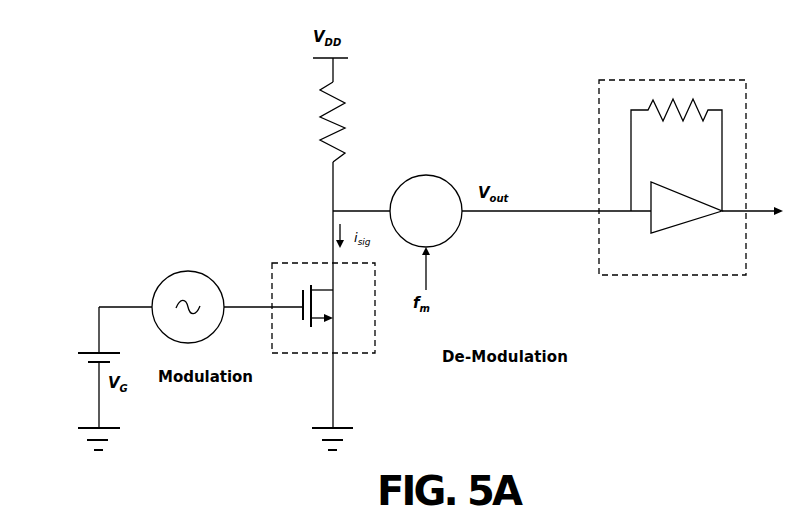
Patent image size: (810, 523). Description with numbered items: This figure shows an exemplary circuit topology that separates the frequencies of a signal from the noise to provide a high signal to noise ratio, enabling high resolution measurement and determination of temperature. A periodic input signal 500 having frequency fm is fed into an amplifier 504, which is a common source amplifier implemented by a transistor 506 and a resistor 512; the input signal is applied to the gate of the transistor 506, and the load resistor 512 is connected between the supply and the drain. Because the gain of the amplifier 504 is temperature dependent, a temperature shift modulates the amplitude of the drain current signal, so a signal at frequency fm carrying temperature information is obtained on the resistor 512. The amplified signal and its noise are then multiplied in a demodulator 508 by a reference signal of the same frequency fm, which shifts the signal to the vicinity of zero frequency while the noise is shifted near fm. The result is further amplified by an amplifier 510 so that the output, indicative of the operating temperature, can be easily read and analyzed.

The input signal 500 is at (238, 307).
The amplifier 504 is at (323, 286).
The transistor 506 is at (303, 300).
The demodulator 508 is at (430, 175).
The amplifier 510 is at (676, 80).
The resistor 512 is at (322, 126).